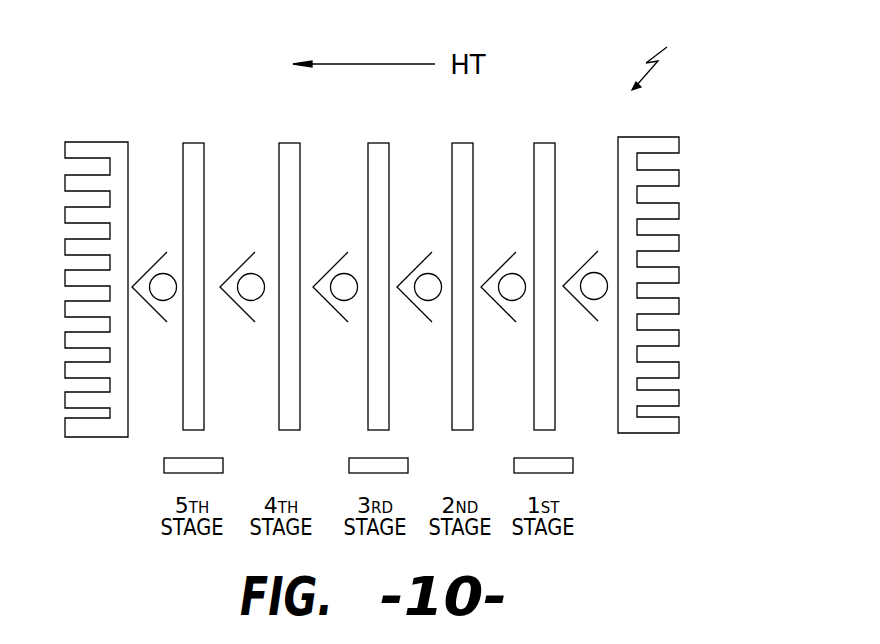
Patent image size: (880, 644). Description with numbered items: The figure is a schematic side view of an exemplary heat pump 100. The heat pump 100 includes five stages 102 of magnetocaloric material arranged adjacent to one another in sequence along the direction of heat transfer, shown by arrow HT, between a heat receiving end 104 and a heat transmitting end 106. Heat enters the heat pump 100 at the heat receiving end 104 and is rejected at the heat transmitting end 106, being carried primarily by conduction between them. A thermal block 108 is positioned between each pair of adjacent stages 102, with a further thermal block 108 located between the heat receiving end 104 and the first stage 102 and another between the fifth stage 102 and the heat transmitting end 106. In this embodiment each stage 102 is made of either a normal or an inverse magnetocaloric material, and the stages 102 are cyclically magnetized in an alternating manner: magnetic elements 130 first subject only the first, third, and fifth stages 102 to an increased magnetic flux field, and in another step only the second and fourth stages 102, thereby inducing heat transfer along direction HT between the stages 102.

The heat pump 100 is at (671, 55).
The stage 102 is at (193, 152).
The heat receiving end 104 is at (640, 455).
The heat transmitting end 106 is at (94, 454).
The thermal block 108 is at (242, 254).
The magnetic element 130 is at (205, 457).